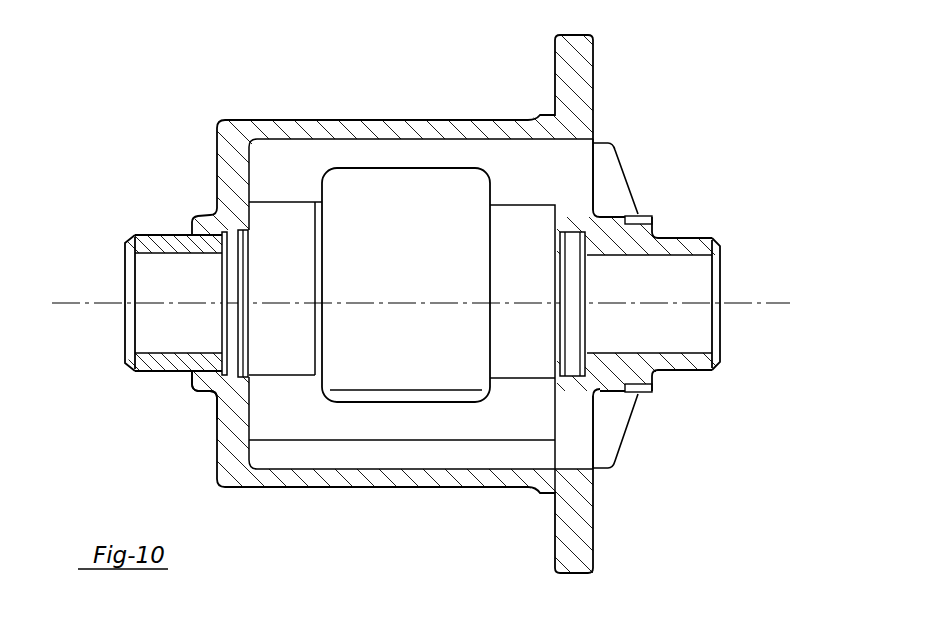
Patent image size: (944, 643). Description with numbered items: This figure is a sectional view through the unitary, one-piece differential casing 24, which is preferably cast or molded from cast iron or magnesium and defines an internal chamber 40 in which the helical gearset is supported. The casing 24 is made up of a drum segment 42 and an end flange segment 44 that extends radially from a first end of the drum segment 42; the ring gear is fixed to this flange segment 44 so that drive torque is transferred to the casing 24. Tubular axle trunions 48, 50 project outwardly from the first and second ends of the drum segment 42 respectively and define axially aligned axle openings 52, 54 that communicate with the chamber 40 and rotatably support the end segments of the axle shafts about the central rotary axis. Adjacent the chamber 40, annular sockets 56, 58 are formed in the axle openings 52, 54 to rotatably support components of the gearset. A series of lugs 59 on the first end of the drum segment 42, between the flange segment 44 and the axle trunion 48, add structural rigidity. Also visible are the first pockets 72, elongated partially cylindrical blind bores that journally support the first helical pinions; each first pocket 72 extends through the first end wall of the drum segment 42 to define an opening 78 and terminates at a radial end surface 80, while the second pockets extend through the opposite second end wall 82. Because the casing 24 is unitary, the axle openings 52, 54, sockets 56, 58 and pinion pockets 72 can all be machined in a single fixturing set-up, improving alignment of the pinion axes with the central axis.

The casing 24 is at (452, 80).
The internal chamber 40 is at (372, 263).
The drum segment 42 is at (360, 120).
The end flange segment 44 is at (585, 58).
The axle trunion 48 is at (697, 233).
The axle trunion 50 is at (171, 240).
The axle opening 52 is at (688, 353).
The axle opening 54 is at (163, 348).
The annular socket 56 is at (568, 374).
The annular socket 58 is at (243, 250).
The lugs 59 is at (620, 182).
The first pockets 72 is at (312, 140).
The opening 78 is at (583, 173).
The radial end surface 80 is at (235, 405).
The second end wall 82 is at (233, 162).